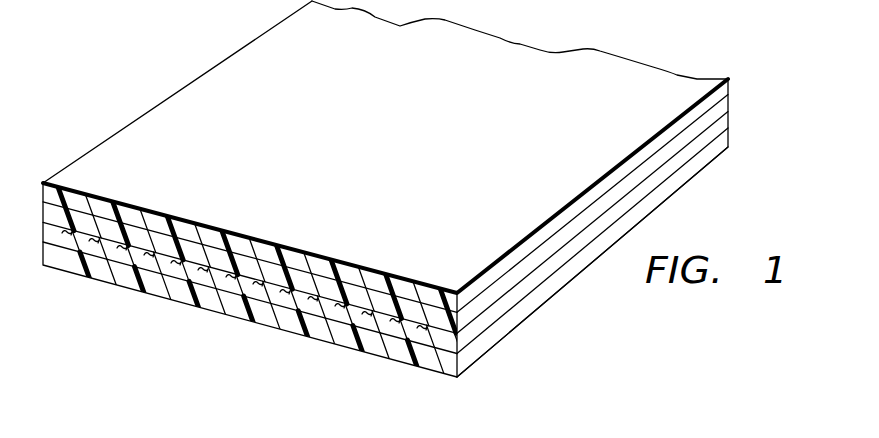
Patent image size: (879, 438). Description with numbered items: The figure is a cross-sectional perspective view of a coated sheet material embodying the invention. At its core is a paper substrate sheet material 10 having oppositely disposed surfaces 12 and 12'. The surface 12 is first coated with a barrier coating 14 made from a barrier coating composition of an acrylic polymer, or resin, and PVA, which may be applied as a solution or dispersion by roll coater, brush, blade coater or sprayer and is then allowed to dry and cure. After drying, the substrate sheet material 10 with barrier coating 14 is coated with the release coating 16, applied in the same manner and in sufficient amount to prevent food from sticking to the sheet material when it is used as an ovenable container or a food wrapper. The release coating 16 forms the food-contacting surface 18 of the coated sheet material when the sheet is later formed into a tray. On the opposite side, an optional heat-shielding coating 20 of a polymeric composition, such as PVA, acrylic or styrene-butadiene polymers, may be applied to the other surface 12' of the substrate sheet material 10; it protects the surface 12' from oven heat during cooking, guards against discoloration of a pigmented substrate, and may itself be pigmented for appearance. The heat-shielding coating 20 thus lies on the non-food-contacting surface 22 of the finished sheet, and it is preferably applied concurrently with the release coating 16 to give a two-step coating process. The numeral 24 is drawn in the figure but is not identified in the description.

The paper substrate sheet material 10 is at (182, 275).
The surface 12 is at (267, 274).
The other surface 12' is at (262, 312).
The barrier coating 14 is at (205, 252).
The release coating 16 is at (152, 218).
The food-contacting surface 18 is at (545, 62).
The heat-shielding coating 20 is at (123, 273).
The non-food-contacting surface 22 is at (546, 307).
The bottom layer 24 is at (80, 424).